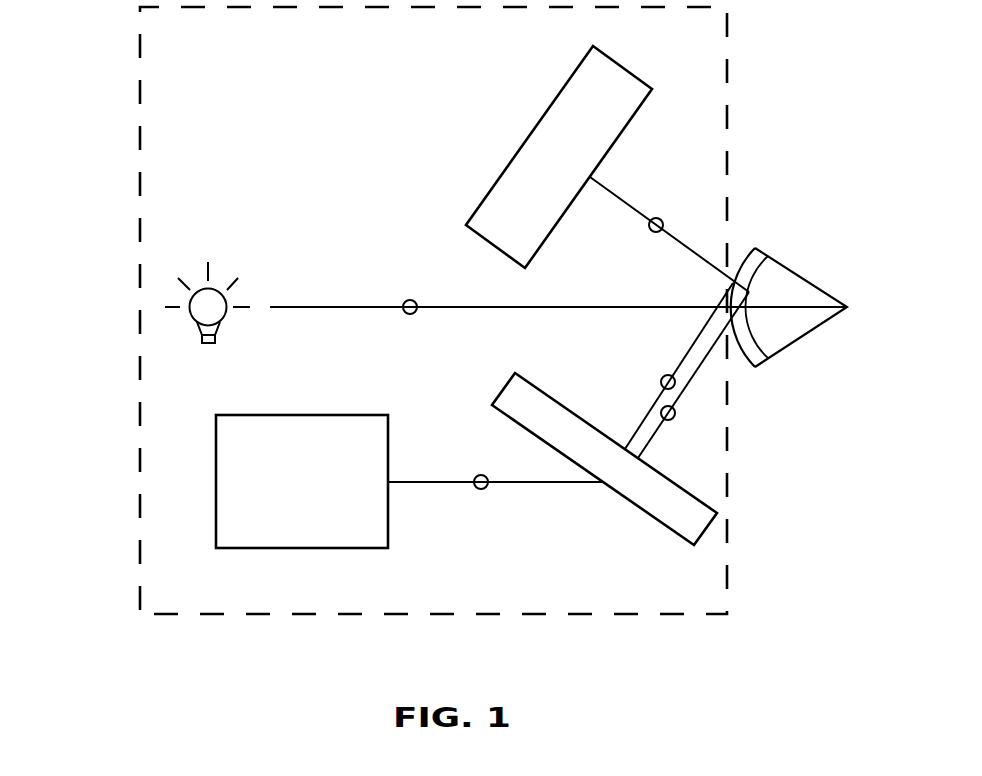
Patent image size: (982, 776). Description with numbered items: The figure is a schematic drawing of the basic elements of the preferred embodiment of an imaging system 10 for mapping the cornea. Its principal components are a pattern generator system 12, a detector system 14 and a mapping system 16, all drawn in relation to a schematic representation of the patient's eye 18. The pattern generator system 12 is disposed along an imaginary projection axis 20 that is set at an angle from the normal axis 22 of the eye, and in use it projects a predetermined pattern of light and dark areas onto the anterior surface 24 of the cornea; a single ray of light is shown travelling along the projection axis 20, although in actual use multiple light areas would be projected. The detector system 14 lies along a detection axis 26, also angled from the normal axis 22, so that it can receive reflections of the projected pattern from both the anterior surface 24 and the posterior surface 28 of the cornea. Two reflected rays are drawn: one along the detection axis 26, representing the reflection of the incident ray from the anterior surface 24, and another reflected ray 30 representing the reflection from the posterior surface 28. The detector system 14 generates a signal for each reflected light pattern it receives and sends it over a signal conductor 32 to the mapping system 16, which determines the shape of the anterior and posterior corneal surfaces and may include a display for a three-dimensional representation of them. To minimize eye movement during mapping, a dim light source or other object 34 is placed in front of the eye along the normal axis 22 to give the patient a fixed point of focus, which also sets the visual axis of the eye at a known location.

The imaging system 10 is at (138, 127).
The pattern generator system 12 is at (545, 123).
The detector system 14 is at (698, 515).
The mapping system 16 is at (317, 491).
The patient's eye 18 is at (838, 257).
The projection axis 20 is at (661, 220).
The normal axis 22 is at (406, 300).
The anterior surface 24 is at (743, 353).
The detection axis 26 is at (660, 380).
The posterior surface 28 is at (760, 270).
The reflected ray 30 is at (675, 415).
The signal conductor 32 is at (482, 490).
The light source 34 is at (217, 328).